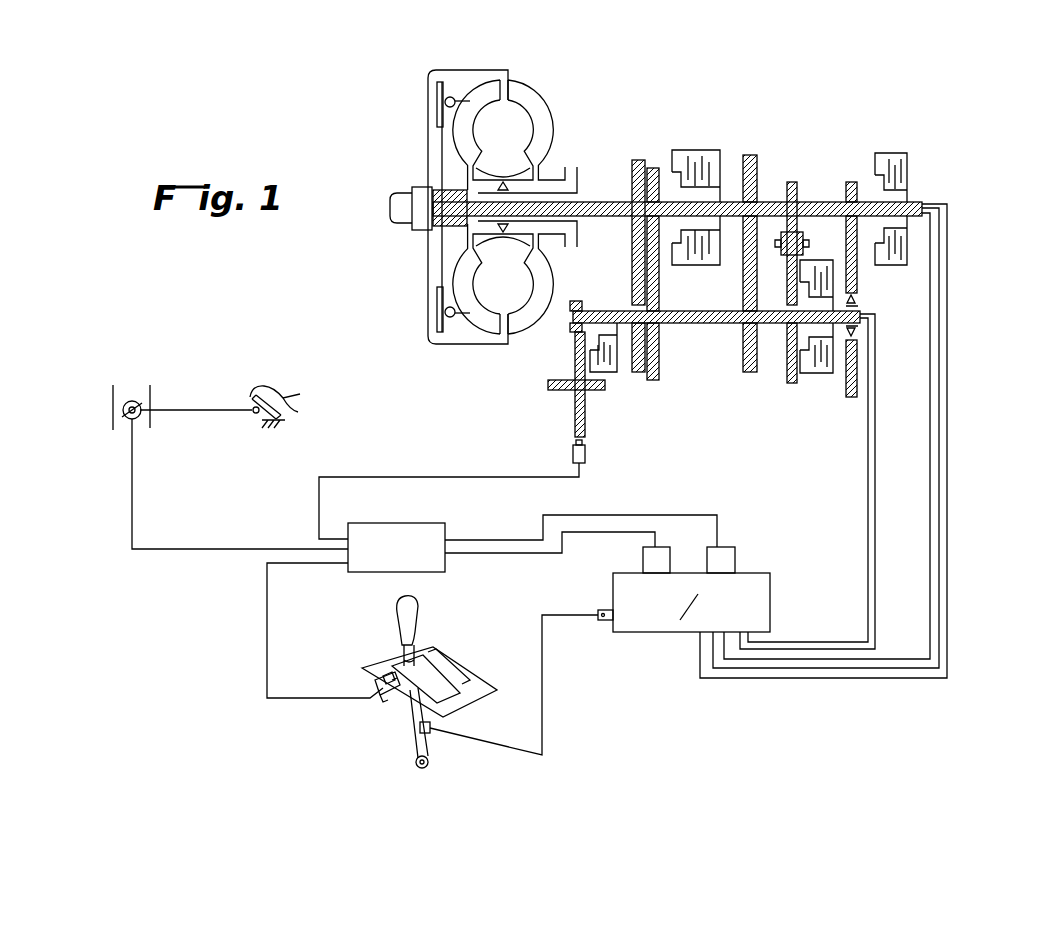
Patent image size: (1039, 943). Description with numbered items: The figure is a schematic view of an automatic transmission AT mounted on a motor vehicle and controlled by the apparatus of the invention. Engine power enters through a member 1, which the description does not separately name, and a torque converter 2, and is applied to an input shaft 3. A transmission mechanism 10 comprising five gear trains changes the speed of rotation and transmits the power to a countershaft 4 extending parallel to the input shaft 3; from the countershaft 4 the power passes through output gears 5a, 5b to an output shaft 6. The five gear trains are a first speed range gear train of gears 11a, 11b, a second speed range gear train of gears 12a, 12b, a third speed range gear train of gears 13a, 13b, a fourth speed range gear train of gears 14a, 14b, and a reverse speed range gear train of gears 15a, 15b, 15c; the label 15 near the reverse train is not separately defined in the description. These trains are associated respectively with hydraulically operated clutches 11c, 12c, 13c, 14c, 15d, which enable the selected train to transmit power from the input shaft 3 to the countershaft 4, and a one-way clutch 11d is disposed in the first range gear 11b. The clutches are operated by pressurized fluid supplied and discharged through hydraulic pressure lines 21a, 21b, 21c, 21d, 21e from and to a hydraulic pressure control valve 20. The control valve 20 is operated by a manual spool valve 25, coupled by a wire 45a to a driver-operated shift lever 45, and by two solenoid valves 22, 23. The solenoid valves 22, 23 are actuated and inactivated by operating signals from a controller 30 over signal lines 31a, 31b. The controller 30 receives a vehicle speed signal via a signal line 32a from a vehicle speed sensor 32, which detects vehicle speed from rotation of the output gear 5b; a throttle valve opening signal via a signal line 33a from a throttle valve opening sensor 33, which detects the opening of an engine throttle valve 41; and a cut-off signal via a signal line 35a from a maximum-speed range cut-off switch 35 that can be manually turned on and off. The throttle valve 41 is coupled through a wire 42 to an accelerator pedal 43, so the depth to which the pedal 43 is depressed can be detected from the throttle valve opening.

The engine output shaft 1 is at (392, 218).
The torque converter 2 is at (538, 78).
The input shaft 3 is at (588, 201).
The countershaft 4 is at (706, 326).
The output gear 5a is at (571, 320).
The output gear 5b is at (574, 352).
The output shaft 6 is at (556, 392).
The transmission mechanism 10 is at (707, 132).
The first speed range gear 11a is at (851, 180).
The first speed range gear 11b is at (858, 280).
The hydraulically operated clutch 11c is at (893, 153).
The one-way clutch 11d is at (860, 306).
The second speed range gear 12a is at (652, 166).
The second speed range gear 12b is at (662, 376).
The hydraulically operated clutch 12c is at (670, 262).
The third speed range gear 13a is at (632, 160).
The third speed range gear 13b is at (640, 374).
The hydraulically operated clutch 13c is at (612, 374).
The fourth speed range gear 14a is at (758, 164).
The fourth speed range gear 14b is at (743, 380).
The hydraulically operated clutch 14c is at (748, 154).
The clutch 15 is at (816, 285).
The reverse speed range gear 15a is at (789, 184).
The reverse speed range gear 15b is at (803, 243).
The reverse speed range gear 15c is at (790, 385).
The hydraulically operated clutch 15d is at (812, 375).
The hydraulic pressure control valve 20 is at (772, 596).
The hydraulic pressure line 21a is at (796, 638).
The hydraulic pressure line 21b is at (876, 618).
The hydraulic pressure line 21c is at (928, 578).
The hydraulic pressure line 21d is at (950, 556).
The hydraulic pressure line 21e is at (958, 598).
The solenoid valve 22 is at (668, 542).
The solenoid valve 23 is at (734, 542).
The manual spool valve 25 is at (604, 622).
The controller 30 is at (427, 522).
The signal line 31a is at (490, 540).
The signal line 31b is at (490, 553).
The vehicle speed sensor 32 is at (586, 452).
The signal line 32a is at (546, 477).
The throttle valve opening sensor 33 is at (126, 420).
The signal line 33a is at (133, 500).
The maximum-speed range cut-off switch 35 is at (376, 684).
The signal line 35a is at (268, 642).
The throttle valve 41 is at (141, 402).
The wire 42 is at (180, 413).
The accelerator pedal 43 is at (250, 402).
The shift lever 45 is at (418, 640).
The wire 45a is at (543, 660).
The automatic transmission AT is at (847, 66).